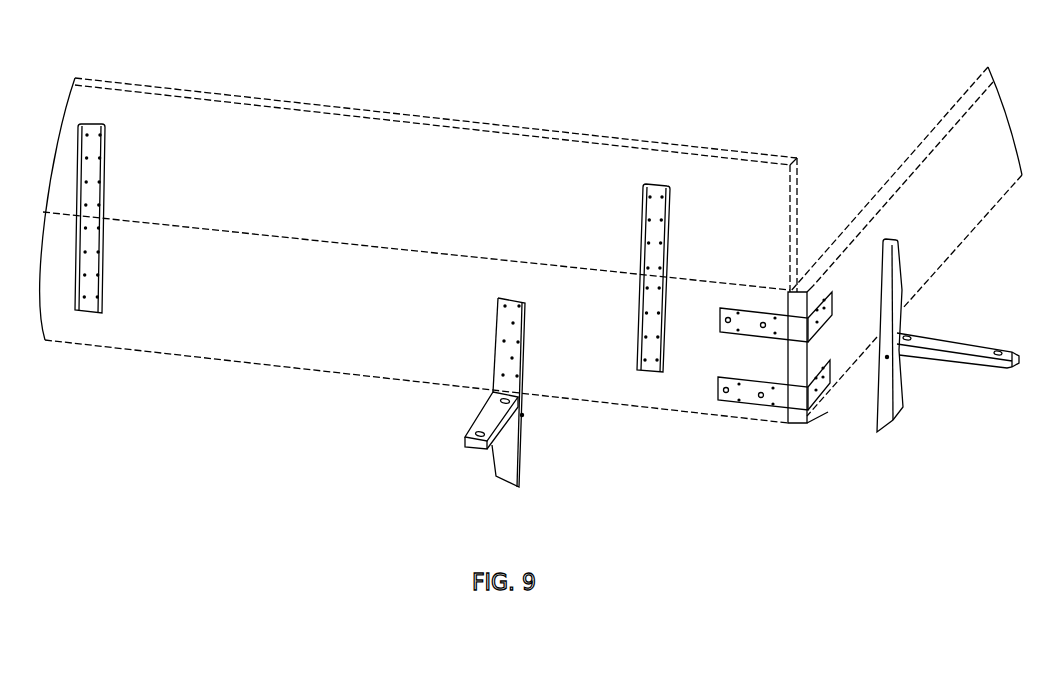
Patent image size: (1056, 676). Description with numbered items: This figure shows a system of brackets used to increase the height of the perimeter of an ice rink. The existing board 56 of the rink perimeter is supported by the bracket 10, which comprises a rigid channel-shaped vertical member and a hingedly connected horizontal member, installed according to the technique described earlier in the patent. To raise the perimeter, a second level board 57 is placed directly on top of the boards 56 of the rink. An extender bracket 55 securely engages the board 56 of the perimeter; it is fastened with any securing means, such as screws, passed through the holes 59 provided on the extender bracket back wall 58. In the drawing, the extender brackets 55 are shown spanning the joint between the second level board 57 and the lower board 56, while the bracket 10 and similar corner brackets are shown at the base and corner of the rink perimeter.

The bracket 10 is at (463, 417).
The extender bracket 55 is at (675, 197).
The board 56 is at (337, 343).
The second level board 57 is at (447, 158).
The extender bracket back wall 58 is at (95, 130).
The holes 59 is at (90, 158).